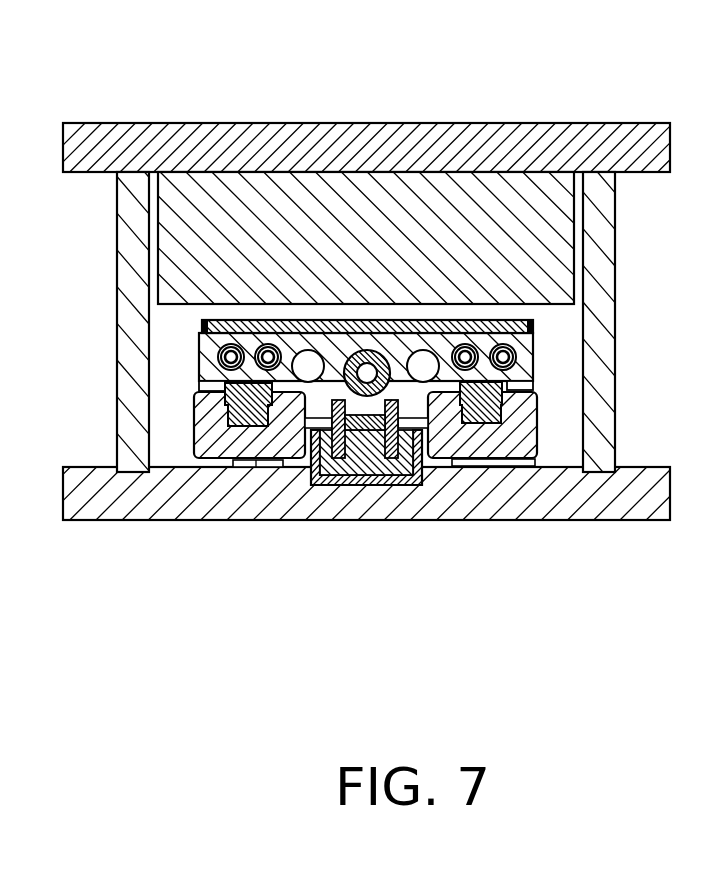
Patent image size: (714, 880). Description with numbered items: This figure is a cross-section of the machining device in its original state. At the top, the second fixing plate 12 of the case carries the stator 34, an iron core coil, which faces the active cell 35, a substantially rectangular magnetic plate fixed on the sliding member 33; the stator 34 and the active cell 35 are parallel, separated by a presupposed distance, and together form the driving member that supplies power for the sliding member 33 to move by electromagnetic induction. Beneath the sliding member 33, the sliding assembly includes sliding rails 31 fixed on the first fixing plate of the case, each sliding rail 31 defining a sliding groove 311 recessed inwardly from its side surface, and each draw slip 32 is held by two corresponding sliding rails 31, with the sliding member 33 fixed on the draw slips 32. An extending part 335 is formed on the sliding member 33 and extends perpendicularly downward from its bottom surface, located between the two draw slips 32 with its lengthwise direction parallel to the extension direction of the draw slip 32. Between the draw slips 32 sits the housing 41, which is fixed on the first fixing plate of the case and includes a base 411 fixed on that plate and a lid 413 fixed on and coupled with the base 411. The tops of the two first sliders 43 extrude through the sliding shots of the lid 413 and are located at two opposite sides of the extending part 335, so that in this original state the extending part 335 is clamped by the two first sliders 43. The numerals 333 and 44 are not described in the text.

The second fixing plate 12 is at (447, 130).
The stator 34 is at (530, 258).
The active cell 35 is at (538, 323).
The sliding member 33 is at (362, 347).
The pin hole 333 is at (345, 368).
The extending part 335 is at (345, 405).
The first slider 43 is at (332, 410).
The right thin plate 44 is at (432, 403).
The sliding groove 311 is at (232, 440).
The sliding rail 31 is at (501, 486).
The draw slip 32 is at (482, 420).
The housing 41 is at (360, 522).
The base 411 is at (391, 519).
The lid 413 is at (292, 452).